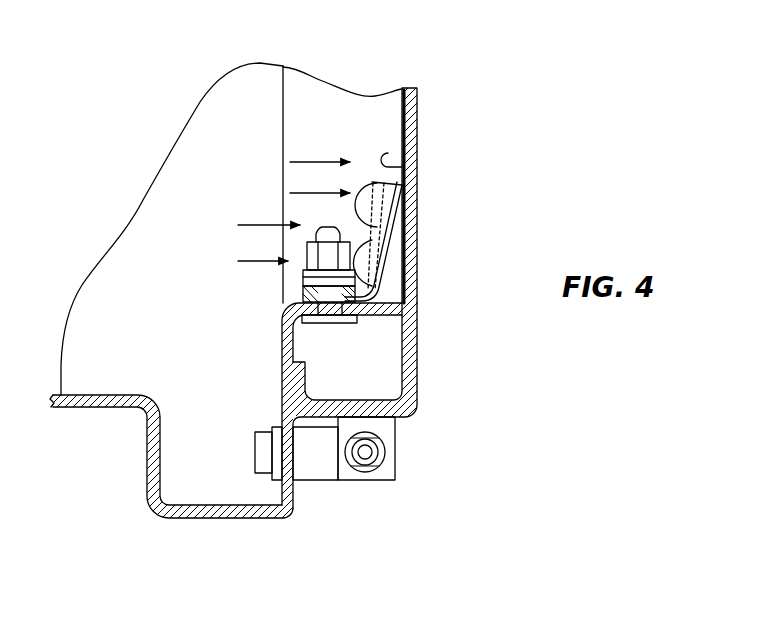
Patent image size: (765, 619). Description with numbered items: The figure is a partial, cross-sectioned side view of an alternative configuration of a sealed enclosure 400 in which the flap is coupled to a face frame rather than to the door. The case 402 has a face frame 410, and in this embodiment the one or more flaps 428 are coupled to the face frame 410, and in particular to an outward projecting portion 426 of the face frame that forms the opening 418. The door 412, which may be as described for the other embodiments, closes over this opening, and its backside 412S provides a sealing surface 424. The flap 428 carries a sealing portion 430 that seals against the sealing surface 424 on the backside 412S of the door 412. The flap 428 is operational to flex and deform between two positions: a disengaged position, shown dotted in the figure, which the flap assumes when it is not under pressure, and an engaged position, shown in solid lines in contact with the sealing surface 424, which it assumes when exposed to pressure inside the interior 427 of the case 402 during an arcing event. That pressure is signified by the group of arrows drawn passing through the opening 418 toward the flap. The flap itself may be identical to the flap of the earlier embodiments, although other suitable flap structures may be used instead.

The sealed enclosure 400 is at (150, 135).
The case 402 is at (145, 452).
The face frame 410 is at (305, 342).
The door 412 is at (428, 120).
The backside of the door 412S is at (400, 124).
The opening 418 is at (325, 98).
The sealing surface 424 is at (388, 153).
The outward projecting portion 426 is at (405, 305).
The interior 427 is at (158, 334).
The flap 428 is at (400, 252).
The sealing portion 430 is at (372, 231).